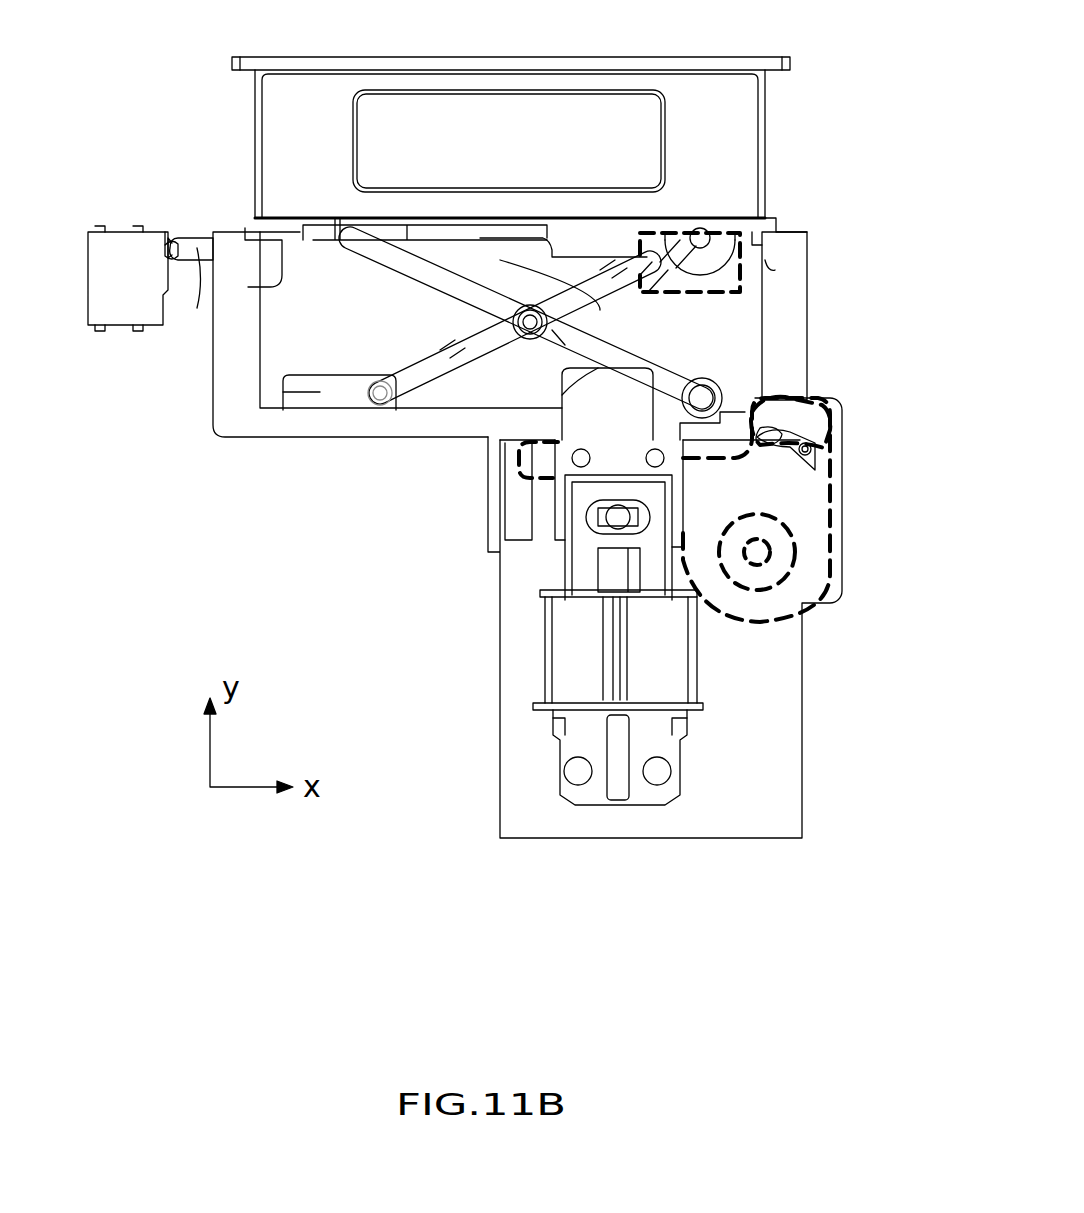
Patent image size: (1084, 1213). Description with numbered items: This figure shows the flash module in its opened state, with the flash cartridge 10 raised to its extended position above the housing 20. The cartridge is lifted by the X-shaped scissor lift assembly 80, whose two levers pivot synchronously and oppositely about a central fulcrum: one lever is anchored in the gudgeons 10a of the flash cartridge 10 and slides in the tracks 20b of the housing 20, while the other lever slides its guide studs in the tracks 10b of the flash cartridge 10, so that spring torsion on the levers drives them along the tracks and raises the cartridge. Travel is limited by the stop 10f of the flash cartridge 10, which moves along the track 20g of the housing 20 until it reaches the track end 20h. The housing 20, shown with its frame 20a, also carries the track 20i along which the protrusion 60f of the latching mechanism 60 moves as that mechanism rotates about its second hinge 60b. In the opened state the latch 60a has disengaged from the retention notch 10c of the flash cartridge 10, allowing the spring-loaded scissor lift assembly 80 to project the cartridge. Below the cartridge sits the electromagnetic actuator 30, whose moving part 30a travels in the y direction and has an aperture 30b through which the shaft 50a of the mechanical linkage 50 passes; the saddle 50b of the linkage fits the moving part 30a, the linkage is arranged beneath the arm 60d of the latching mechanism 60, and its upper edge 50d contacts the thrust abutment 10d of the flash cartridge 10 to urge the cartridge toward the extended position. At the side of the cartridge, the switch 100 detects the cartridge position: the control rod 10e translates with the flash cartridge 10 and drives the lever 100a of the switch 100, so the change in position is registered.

The flash cartridge 10 is at (494, 67).
The gudgeons 10a is at (706, 232).
The tracks 10b is at (335, 240).
The retention notch 10c is at (655, 236).
The thrust abutment 10d is at (628, 300).
The control rod 10e is at (197, 252).
The stop 10f is at (250, 272).
The housing 20 is at (550, 814).
The base frame 20a is at (300, 352).
The tracks 20b is at (320, 392).
The track 20g is at (262, 362).
The track end 20h is at (205, 258).
The track 20i is at (816, 462).
The electromagnetic actuator 30 is at (552, 727).
The moving part 30a is at (565, 540).
The aperture 30b is at (630, 528).
The mechanical linkage 50 is at (680, 503).
The shaft 50a is at (620, 513).
The saddle 50b is at (580, 570).
The upper edge 50d is at (590, 378).
The latching mechanism 60 is at (833, 505).
The latch 60a is at (790, 400).
The second hinge 60b is at (757, 552).
The arm 60d is at (528, 460).
The protrusion 60f is at (810, 440).
The scissor lift assembly 80 is at (362, 364).
The switch 100 is at (135, 338).
The lever 100a is at (170, 243).